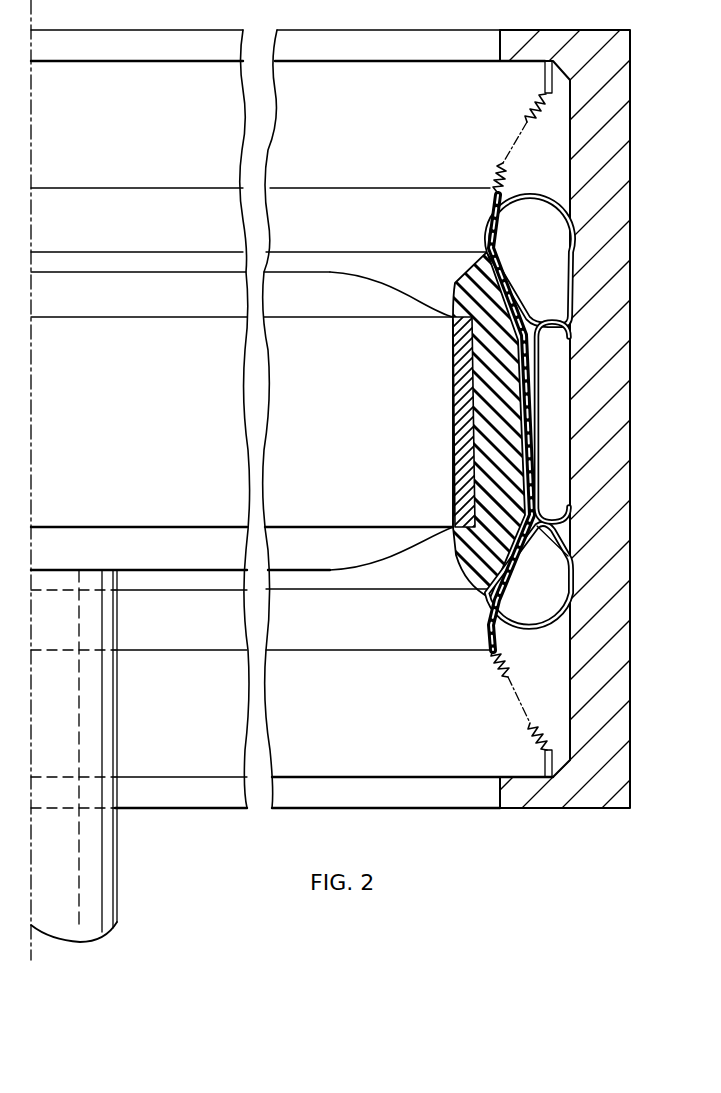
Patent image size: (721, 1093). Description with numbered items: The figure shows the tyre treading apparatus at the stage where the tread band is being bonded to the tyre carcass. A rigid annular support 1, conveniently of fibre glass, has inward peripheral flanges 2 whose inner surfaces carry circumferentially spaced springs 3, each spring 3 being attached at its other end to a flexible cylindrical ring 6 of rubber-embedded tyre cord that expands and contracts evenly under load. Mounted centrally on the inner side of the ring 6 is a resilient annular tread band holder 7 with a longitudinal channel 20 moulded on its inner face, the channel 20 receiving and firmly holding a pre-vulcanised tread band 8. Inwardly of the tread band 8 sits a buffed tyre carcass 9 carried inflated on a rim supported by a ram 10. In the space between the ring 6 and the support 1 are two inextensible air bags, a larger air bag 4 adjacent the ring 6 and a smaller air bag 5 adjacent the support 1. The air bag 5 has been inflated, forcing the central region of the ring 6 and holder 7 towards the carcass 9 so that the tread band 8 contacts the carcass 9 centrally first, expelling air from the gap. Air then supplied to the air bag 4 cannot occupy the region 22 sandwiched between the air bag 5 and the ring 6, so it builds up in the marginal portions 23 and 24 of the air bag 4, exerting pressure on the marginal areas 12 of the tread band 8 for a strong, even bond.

The rigid annular support 1 is at (612, 684).
The inward peripheral flange 2 is at (510, 44).
The spring 3 is at (520, 122).
The air bag 4 is at (558, 538).
The air bag 5 is at (560, 364).
The flexible cylindrical ring 6 is at (447, 187).
The annular tread band holder 7 is at (460, 289).
The pre-vulcanised tread band 8 is at (455, 422).
The buffed tyre carcass 9 is at (183, 426).
The ram 10 is at (86, 716).
The marginal area of the tread band 12 is at (453, 335).
The longitudinal channel 20 is at (457, 383).
The region 22 is at (530, 408).
The marginal portion of air bag 23 is at (543, 263).
The marginal portion of air bag 24 is at (533, 587).